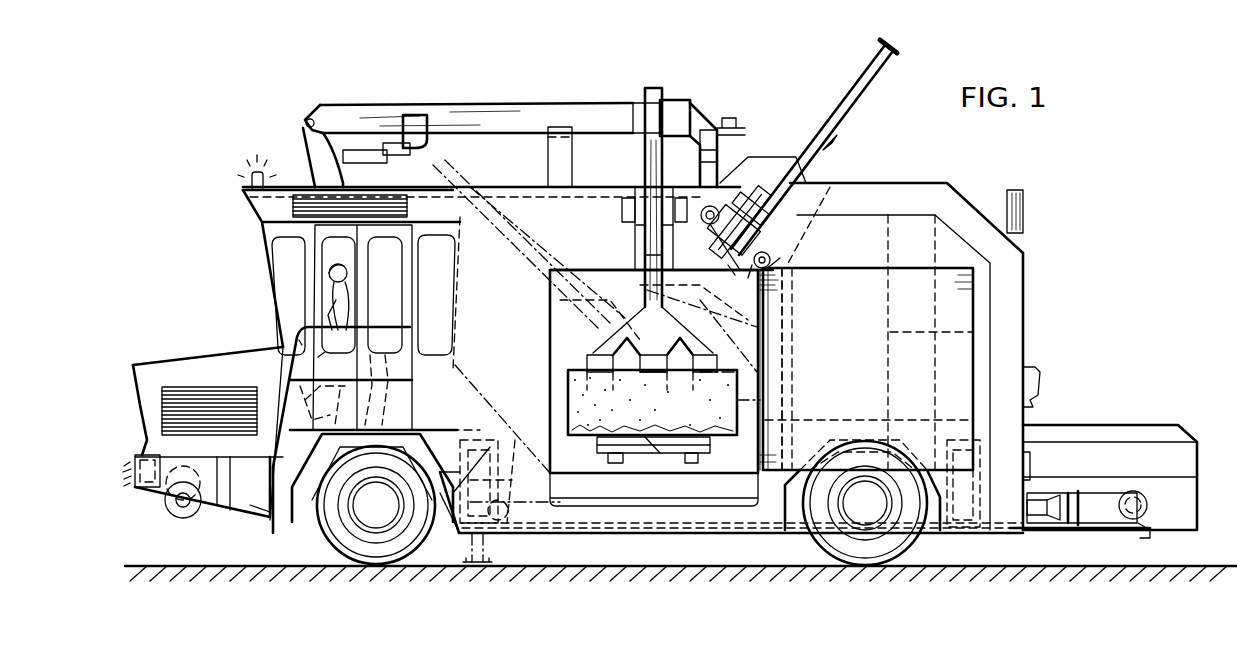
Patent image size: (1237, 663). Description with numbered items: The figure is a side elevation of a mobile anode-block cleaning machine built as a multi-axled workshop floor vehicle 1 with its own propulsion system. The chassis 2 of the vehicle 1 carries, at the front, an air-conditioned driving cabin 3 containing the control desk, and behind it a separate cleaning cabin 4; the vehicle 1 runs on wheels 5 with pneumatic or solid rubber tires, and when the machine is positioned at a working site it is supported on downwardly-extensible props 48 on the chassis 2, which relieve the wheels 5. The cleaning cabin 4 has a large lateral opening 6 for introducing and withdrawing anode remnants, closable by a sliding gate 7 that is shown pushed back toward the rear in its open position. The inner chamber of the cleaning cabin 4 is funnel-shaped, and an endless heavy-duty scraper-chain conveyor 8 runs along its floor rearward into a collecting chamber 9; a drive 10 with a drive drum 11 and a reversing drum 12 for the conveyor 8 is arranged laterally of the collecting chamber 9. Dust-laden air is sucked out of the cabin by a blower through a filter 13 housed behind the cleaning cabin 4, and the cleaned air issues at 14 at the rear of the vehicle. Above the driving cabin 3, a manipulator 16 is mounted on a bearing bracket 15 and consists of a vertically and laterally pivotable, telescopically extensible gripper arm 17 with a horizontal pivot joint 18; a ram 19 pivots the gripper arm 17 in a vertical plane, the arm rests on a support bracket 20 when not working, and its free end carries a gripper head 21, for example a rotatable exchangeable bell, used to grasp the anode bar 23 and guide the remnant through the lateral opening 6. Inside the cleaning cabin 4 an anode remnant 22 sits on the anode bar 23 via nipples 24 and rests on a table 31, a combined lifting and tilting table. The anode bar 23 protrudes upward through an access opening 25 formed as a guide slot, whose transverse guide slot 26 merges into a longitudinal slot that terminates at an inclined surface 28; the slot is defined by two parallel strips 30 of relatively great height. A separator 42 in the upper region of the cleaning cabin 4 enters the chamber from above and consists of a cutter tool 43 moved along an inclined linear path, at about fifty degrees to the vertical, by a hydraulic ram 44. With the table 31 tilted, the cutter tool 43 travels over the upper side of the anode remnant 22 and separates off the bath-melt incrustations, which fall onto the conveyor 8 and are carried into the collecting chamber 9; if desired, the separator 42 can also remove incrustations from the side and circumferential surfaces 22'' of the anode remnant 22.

The vehicle 1 is at (758, 108).
The chassis 2 is at (622, 528).
The driving cabin 3 is at (298, 287).
The cleaning cabin 4 is at (453, 520).
The wheels 5 is at (363, 556).
The lateral opening 6 is at (550, 306).
The sliding gate 7 is at (864, 282).
The scraper-chain conveyor 8 is at (528, 518).
The collecting chamber 9 is at (1197, 483).
The drive 10 is at (1095, 523).
The drive wheel or drive drum 11 is at (1145, 530).
The reversing wheel or reversing drum 12 is at (507, 523).
The filter 13 is at (790, 362).
The cleaned air outlet 14 is at (1022, 205).
The bearing bracket 15 is at (312, 142).
The manipulator 16 is at (472, 113).
The gripper arm 17 is at (557, 103).
The horizontal pivot joint 18 is at (309, 119).
The ram 19 is at (367, 150).
The support bracket 20 is at (548, 155).
The gripper head 21 is at (700, 167).
The anode remnant 22 is at (622, 402).
The side and circumferential surfaces 22'' is at (780, 389).
The anode bar 23 is at (653, 228).
The nipples 24 is at (587, 363).
The access opening 25 is at (641, 185).
The transverse guide slot 26 is at (640, 240).
The inclined surface 28 is at (452, 195).
The parallel strips 30 is at (665, 257).
The table 31 is at (675, 445).
The separator 42 is at (837, 135).
The cutter tool 43 is at (718, 262).
The hydraulic ram 44 is at (856, 93).
The props 48 is at (476, 565).